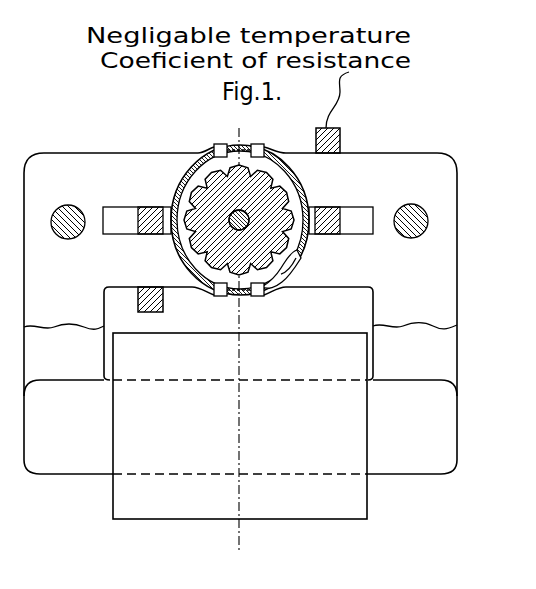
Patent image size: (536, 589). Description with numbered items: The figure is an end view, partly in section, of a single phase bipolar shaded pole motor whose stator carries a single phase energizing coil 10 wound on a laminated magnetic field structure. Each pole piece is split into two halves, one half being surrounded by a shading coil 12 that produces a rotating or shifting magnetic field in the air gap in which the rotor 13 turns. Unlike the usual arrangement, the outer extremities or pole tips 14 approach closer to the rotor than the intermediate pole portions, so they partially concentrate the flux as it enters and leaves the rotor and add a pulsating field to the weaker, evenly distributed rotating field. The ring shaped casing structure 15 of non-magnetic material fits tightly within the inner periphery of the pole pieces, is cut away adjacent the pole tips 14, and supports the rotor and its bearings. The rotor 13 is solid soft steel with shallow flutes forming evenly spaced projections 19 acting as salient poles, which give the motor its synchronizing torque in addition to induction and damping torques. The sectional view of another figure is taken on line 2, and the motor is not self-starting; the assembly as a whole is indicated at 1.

The resistance unit assembly 1 is at (28, 375).
The section line 2 is at (212, 128).
The single phase energizing coil 10 is at (170, 511).
The shading coil 12 is at (342, 137).
The rotor 13 is at (297, 192).
The pole tips 14 is at (253, 144).
The casing structure 15 is at (181, 181).
The projections 19 is at (292, 261).